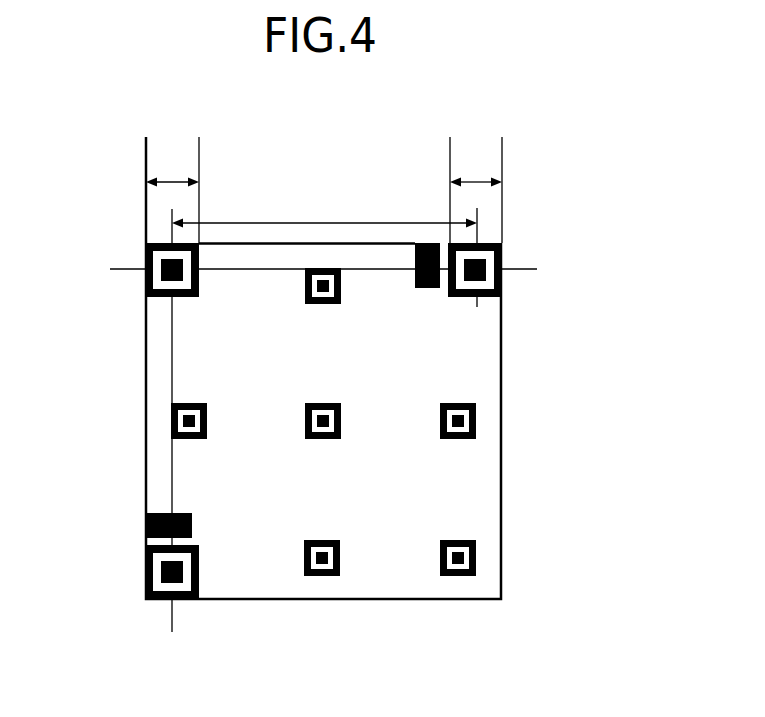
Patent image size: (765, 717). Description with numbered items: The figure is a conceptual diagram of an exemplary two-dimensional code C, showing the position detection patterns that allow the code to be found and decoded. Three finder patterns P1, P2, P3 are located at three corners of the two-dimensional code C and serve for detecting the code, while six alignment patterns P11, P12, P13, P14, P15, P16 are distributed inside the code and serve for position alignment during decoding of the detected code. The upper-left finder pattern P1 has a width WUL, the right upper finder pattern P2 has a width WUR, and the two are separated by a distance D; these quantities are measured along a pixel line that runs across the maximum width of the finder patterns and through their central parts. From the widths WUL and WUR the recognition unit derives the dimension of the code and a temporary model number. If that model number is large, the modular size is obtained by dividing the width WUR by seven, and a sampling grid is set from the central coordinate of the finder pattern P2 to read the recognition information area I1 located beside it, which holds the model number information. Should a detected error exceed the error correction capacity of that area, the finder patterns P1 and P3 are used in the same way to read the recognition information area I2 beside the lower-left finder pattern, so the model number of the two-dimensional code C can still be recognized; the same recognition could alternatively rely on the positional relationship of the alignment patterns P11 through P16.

The two-dimensional code C is at (145, 318).
The finder pattern P1 is at (165, 264).
The finder pattern P2 is at (483, 268).
The finder pattern P3 is at (162, 570).
The alignment pattern P11 is at (320, 305).
The alignment pattern P12 is at (207, 421).
The alignment pattern P13 is at (320, 440).
The alignment pattern P14 is at (477, 421).
The alignment pattern P15 is at (322, 576).
The alignment pattern P16 is at (455, 576).
The recognition information area I1 is at (426, 243).
The recognition information area I2 is at (146, 523).
The distance D is at (324, 411).
The width of finder pattern P1 WUL is at (173, 188).
The width of finder pattern P2 WUR is at (475, 187).